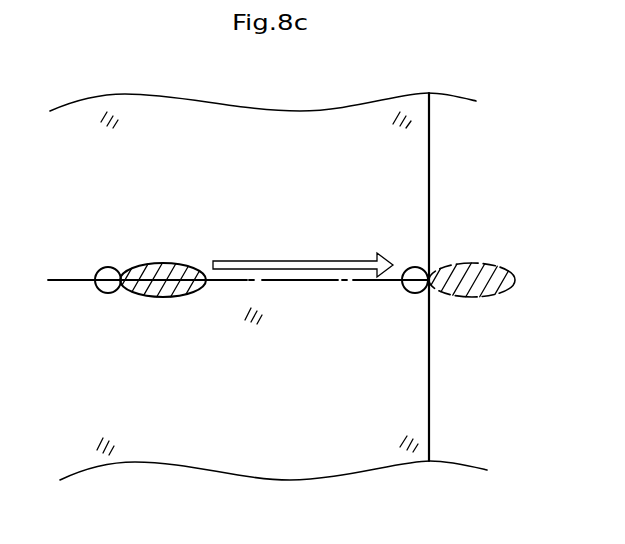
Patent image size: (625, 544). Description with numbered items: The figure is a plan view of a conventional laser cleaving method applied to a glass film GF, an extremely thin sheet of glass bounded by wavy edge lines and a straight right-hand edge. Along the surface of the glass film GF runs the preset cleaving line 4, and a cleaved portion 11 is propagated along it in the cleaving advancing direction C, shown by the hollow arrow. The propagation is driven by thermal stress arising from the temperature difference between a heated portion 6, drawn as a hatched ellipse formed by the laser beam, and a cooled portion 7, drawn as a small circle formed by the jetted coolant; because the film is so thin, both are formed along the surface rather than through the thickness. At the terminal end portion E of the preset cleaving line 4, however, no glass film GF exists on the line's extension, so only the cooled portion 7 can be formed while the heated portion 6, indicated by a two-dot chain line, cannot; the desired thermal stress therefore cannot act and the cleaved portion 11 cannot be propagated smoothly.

The cleaved portion 11 is at (70, 290).
The preset cleaving line 4 is at (300, 284).
The cooled portion 7 is at (109, 267).
The heated portion 6 is at (159, 263).
The cleaving advancing direction C is at (303, 256).
The terminal end portion E is at (442, 304).
The glass film GF is at (298, 141).